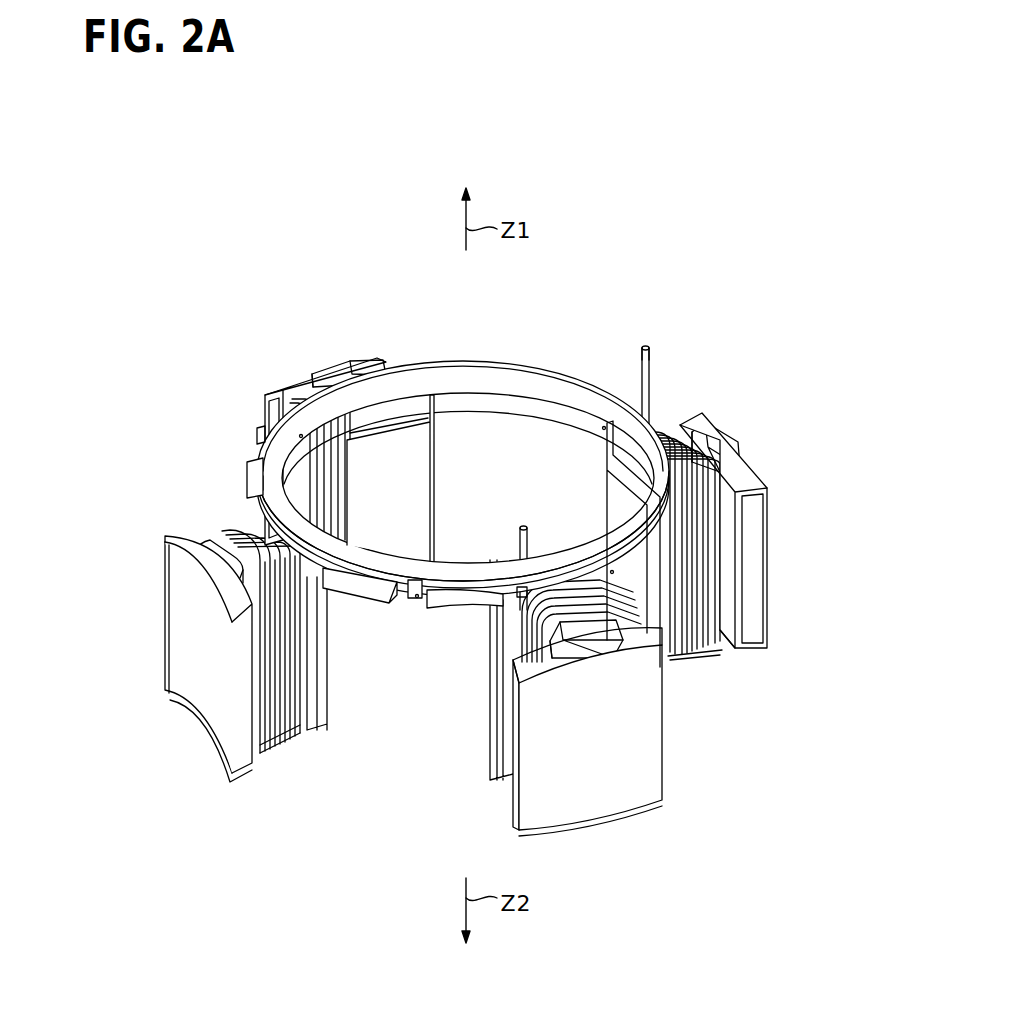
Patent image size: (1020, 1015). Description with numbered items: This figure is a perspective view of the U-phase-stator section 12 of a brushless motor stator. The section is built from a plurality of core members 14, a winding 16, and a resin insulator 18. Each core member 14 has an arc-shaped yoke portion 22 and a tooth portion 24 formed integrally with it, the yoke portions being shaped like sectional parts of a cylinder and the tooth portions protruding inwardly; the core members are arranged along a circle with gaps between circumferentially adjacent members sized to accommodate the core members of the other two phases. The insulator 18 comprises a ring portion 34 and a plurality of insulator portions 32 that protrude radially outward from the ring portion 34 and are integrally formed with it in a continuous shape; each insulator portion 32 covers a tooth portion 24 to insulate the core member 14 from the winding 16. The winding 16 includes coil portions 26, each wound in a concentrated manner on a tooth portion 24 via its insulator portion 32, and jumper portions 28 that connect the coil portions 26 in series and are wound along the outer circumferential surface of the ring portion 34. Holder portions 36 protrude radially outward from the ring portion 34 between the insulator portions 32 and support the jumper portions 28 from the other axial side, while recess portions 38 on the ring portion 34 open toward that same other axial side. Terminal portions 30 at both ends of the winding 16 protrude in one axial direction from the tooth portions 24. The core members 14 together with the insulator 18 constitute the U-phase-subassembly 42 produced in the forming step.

The U-phase-stator section 12 is at (565, 227).
The core member 14 is at (466, 560).
The winding 16 is at (652, 361).
The insulator 18 is at (565, 373).
The yoke portion 22 is at (165, 677).
The tooth portion 24 is at (290, 750).
The coil portion 26 is at (718, 394).
The jumper portion 28 is at (412, 598).
The terminal portion 30 is at (651, 350).
The insulator portion 32 is at (300, 797).
The ring portion 34 is at (512, 372).
The holder portion 36 is at (363, 604).
The recess portion 38 is at (300, 436).
The U-phase-subassembly 42 is at (165, 629).